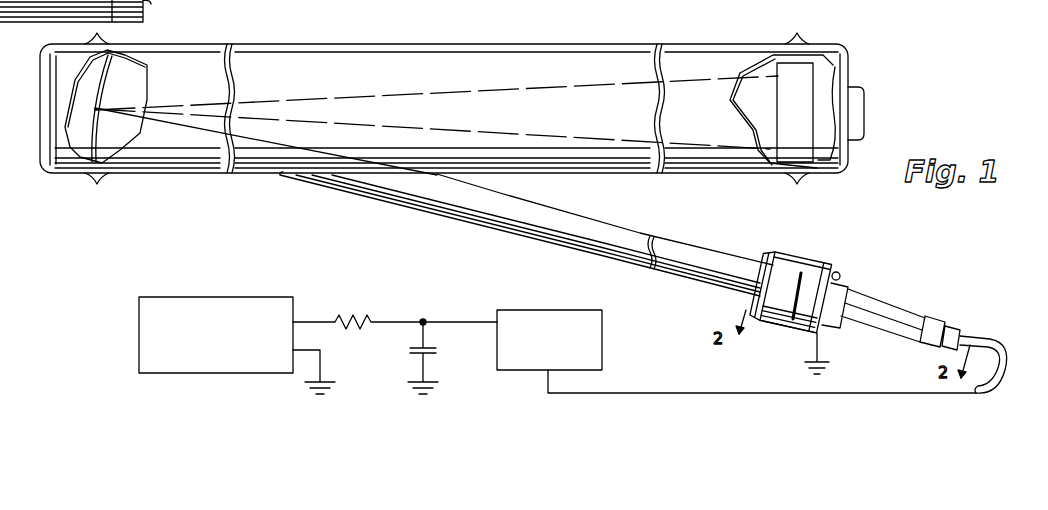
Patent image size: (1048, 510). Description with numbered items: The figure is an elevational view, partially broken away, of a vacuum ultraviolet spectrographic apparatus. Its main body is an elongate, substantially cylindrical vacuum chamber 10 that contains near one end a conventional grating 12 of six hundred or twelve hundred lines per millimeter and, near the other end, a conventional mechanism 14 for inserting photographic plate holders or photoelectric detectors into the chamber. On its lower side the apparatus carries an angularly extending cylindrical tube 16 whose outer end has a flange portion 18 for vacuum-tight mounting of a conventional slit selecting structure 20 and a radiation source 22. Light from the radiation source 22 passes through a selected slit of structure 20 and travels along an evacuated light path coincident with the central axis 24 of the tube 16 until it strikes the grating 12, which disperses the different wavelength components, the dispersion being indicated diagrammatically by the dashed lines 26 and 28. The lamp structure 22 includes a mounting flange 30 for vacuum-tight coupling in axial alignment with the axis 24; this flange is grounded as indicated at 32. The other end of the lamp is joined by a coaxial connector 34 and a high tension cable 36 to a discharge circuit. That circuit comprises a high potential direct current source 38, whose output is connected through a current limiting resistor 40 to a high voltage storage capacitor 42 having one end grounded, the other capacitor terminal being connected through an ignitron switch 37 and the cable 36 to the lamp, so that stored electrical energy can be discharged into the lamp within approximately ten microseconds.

The vacuum chamber 10 is at (424, 40).
The grating 12 is at (105, 86).
The mechanism 14 is at (775, 103).
The cylindrical tube 16 is at (402, 210).
The flange portion 18 is at (777, 252).
The slit selecting structure 20 is at (800, 260).
The radiation source 22 is at (904, 292).
The central axis 24 is at (570, 232).
The dashed line 26 is at (572, 140).
The dashed line 28 is at (470, 88).
The mounting flange 30 is at (841, 277).
The ground 32 is at (812, 352).
The coaxial connector 34 is at (940, 322).
The high tension cable 36 is at (996, 348).
The ignitron switch 37 is at (497, 311).
The high potential direct current source 38 is at (262, 297).
The current limiting resistor 40 is at (372, 318).
The high voltage storage capacitor 42 is at (405, 351).